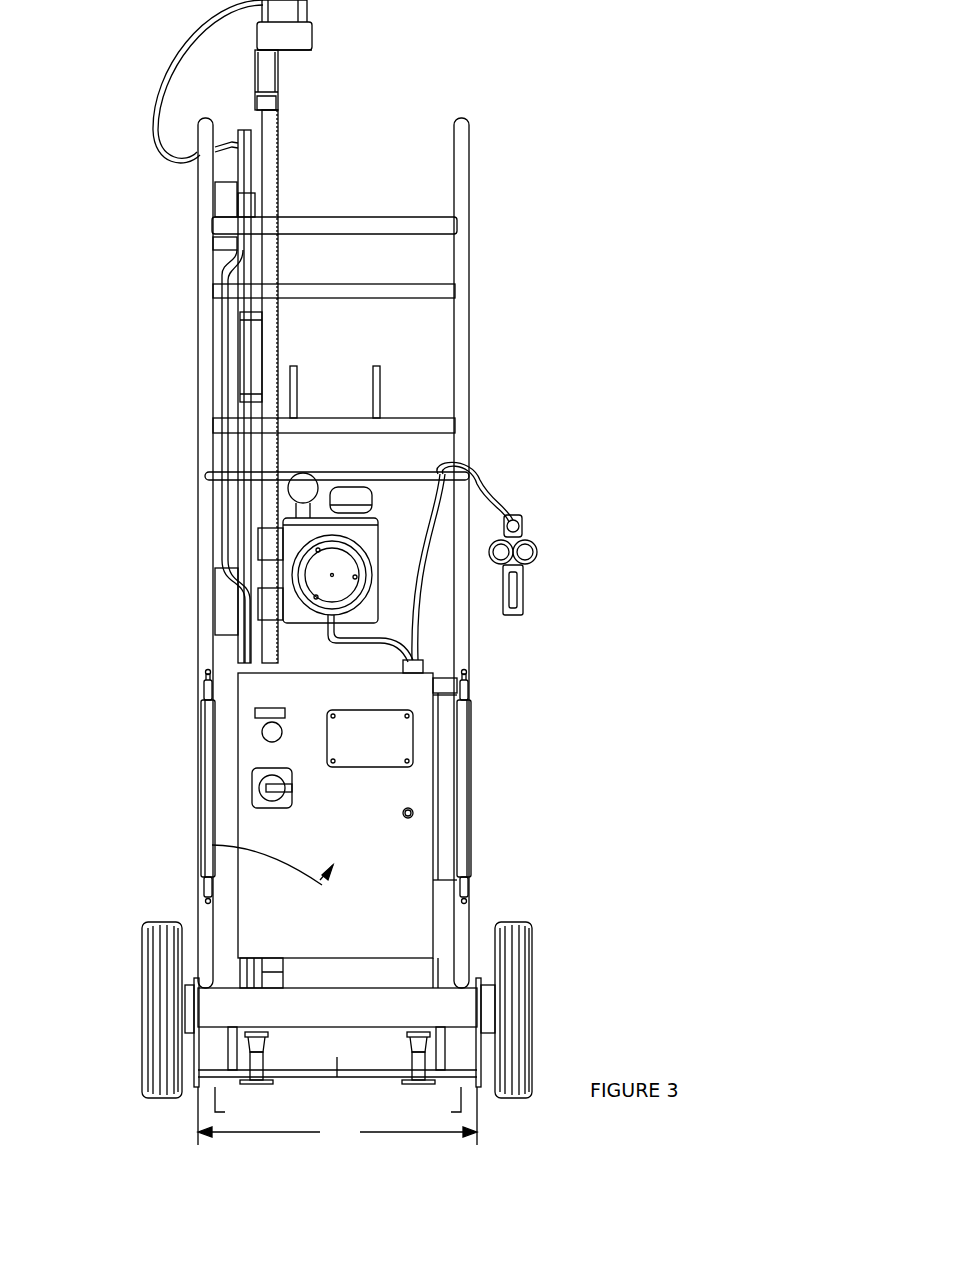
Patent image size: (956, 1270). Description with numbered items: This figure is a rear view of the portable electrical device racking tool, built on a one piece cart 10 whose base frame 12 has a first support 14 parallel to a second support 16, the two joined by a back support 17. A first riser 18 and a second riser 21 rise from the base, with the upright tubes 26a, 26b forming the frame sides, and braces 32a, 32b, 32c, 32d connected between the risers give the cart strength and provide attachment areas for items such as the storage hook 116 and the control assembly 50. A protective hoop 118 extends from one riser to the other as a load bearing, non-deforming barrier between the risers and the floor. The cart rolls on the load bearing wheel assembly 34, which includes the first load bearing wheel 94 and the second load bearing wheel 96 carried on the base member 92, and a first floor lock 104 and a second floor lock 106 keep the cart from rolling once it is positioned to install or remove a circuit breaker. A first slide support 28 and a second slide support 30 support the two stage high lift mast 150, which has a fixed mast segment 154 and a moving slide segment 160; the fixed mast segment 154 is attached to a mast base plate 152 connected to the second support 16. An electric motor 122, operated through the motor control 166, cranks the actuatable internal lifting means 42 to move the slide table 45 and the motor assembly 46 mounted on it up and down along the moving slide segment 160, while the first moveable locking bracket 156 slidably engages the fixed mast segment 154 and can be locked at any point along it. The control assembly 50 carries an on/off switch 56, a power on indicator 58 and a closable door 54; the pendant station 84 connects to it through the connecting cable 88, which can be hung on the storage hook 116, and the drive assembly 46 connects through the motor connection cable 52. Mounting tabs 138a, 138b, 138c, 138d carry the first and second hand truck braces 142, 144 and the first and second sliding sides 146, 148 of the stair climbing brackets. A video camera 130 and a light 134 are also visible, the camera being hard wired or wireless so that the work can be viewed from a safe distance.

The one piece cart 10 is at (558, 80).
The base frame 12 is at (337, 1116).
The first support 14 is at (444, 1107).
The second support 16 is at (234, 1107).
The back support 17 is at (340, 1081).
The first riser 18 is at (465, 250).
The second riser 21 is at (205, 250).
The right upright post 26a is at (468, 120).
The left upright post 26b is at (205, 118).
The first slide support 28 is at (225, 575).
The second slide support 30 is at (220, 186).
The brace 32a is at (443, 292).
The brace 32b is at (443, 427).
The brace 32c is at (444, 696).
The brace 32d is at (450, 880).
The load bearing wheel assembly 34 is at (138, 1010).
The actuatable internal lifting means 42 is at (280, 183).
The slide table 45 is at (282, 622).
The motor assembly 46 is at (378, 528).
The control assembly 50 is at (212, 845).
The motor connection cable 52 is at (365, 646).
The closable door 54 is at (272, 840).
The on/off switch 56 is at (257, 776).
The power on indicator 58 is at (266, 726).
The pendant station 84 is at (528, 565).
The connecting cable 88 is at (497, 470).
The base frame 92 is at (378, 1005).
The first load bearing wheel 94 is at (515, 922).
The second load bearing wheel 96 is at (162, 922).
The first floor lock 104 is at (415, 1084).
The second floor lock 106 is at (258, 1084).
The storage hook 116 is at (297, 372).
The protective hoop 118 is at (205, 475).
The electric motor 122 is at (288, 35).
The video camera 130 is at (305, 482).
The light 134 is at (355, 495).
The mounting tab 138a is at (468, 672).
The mounting tab 138b is at (468, 892).
The mounting tab 138c is at (204, 670).
The mounting tab 138d is at (204, 888).
The first hand truck brace 142 is at (466, 690).
The second hand truck brace 144 is at (206, 690).
The first sliding side 146 is at (468, 790).
The second sliding side 148 is at (208, 795).
The two stage high lift mast 150 is at (292, 108).
The mast base plate 152 is at (287, 988).
The fixed mast segment 154 is at (250, 163).
The first moveable locking bracket 156 is at (252, 345).
The moving slide segment 160 is at (270, 132).
The motor control 166 is at (250, 212).